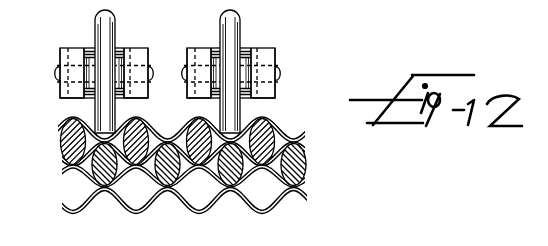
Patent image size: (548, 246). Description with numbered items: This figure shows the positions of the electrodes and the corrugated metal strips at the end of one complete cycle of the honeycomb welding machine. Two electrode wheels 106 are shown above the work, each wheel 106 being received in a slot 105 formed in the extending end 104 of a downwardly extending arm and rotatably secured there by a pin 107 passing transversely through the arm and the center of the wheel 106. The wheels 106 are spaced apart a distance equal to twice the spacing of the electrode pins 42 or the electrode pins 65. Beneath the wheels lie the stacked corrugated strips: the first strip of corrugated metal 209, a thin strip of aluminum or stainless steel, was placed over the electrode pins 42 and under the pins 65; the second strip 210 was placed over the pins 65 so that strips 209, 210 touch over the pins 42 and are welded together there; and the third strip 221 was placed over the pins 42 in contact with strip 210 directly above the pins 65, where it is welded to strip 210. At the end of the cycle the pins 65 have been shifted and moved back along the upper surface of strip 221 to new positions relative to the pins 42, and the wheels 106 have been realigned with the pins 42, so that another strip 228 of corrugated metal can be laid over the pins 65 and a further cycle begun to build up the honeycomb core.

The extending end of arm 104 is at (137, 48).
The slot 105 is at (80, 48).
The electrode wheel 106 is at (114, 17).
The pin 107 is at (279, 74).
The electrode pins 65 is at (60, 134).
The electrode pins 42 is at (92, 172).
The strip of corrugated metal 228 is at (304, 138).
The third strip of corrugated metal 221 is at (305, 146).
The second strip of corrugated metal 210 is at (305, 184).
The strip of corrugated metal 209 is at (284, 200).